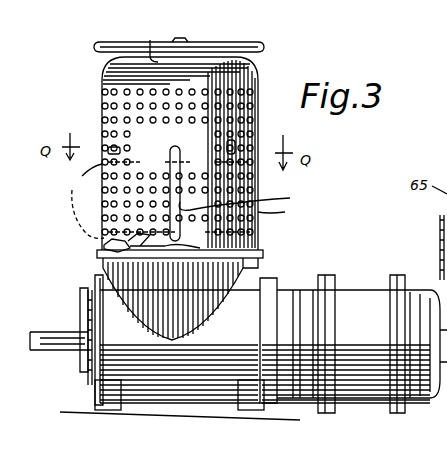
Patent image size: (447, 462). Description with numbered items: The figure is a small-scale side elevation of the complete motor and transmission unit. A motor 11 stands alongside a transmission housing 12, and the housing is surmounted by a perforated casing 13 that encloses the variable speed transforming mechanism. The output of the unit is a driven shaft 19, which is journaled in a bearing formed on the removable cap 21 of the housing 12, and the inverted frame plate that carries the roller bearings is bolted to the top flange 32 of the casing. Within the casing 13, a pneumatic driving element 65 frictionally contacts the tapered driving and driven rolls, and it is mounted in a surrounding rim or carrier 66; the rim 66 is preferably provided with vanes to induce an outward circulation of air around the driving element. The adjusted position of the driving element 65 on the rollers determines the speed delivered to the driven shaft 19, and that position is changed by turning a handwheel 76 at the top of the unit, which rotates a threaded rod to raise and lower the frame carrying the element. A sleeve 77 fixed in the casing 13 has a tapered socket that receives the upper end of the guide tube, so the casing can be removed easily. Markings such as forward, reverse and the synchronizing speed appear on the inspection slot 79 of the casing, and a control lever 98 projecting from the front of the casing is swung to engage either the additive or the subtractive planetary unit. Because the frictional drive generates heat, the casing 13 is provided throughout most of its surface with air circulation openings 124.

The motor 11 is at (360, 398).
The transmission housing 12 is at (248, 336).
The perforated casing 13 is at (256, 74).
The driven shaft 19 is at (62, 351).
The removable cap 21 is at (86, 300).
The top flange 32 is at (256, 256).
The driving element 65 is at (82, 201).
The rim or carrier 66 is at (446, 208).
The handwheel 76 is at (253, 45).
The sleeve 77 is at (150, 40).
The inspection slot 79 is at (242, 200).
The control lever 98 is at (126, 252).
The air circulation openings 124 is at (285, 213).